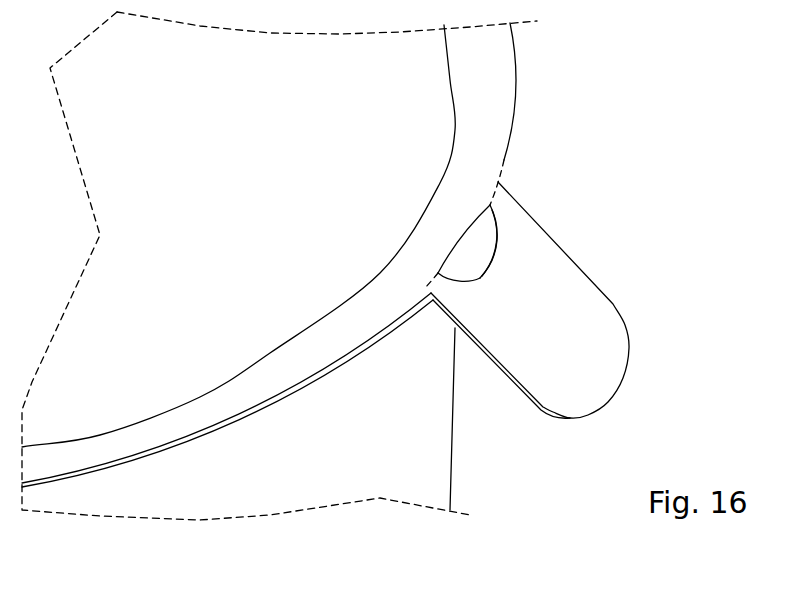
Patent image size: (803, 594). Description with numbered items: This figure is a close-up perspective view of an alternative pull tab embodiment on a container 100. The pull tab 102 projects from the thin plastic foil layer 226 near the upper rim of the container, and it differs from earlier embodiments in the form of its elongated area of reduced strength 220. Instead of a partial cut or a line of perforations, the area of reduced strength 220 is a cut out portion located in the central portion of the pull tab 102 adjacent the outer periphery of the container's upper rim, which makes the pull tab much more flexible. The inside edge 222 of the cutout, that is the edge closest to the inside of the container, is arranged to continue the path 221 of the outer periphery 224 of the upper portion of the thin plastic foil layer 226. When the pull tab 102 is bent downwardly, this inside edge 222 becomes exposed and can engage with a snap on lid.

The container 100 is at (428, 423).
The pull tab 102 is at (567, 290).
The area of reduced strength 220 is at (487, 228).
The path 221 is at (500, 183).
The inside edge 222 is at (460, 245).
The outer periphery 224 is at (260, 410).
The thin plastic foil layer 226 is at (337, 330).